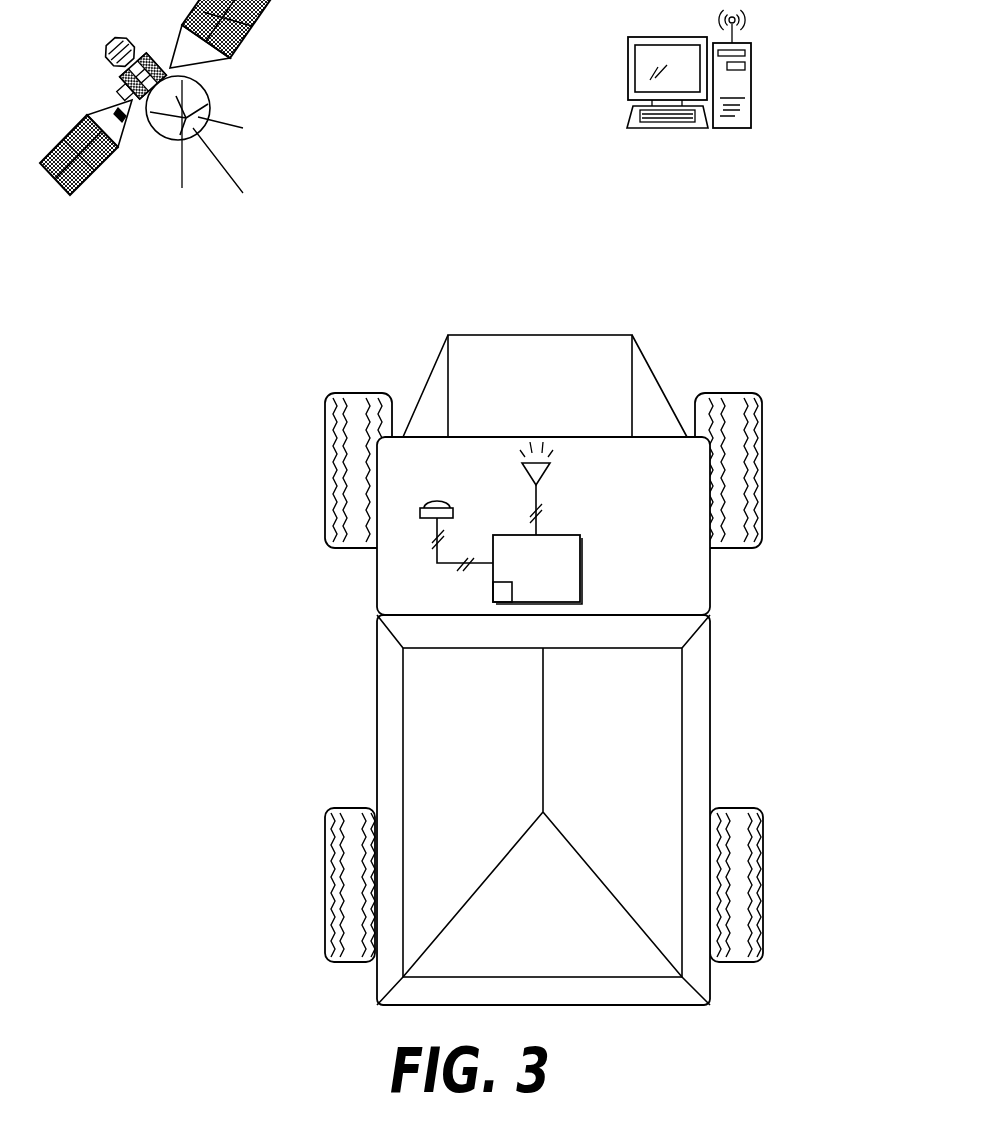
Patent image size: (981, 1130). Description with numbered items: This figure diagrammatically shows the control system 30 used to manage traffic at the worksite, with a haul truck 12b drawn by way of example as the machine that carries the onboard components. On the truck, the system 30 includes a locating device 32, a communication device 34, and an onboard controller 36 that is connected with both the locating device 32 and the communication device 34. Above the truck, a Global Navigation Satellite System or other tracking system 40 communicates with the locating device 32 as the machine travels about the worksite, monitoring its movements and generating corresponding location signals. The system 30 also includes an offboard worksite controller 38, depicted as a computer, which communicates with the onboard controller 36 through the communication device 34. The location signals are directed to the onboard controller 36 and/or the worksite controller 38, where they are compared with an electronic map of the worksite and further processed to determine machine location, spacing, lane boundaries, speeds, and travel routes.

The haul truck 12b is at (722, 308).
The system 30 is at (442, 626).
The locating device 32 is at (430, 500).
The communication device 34 is at (522, 469).
The onboard controller 36 is at (550, 585).
The worksite controller 38 is at (617, 43).
The Global Navigation Satellite System 40 is at (253, 82).